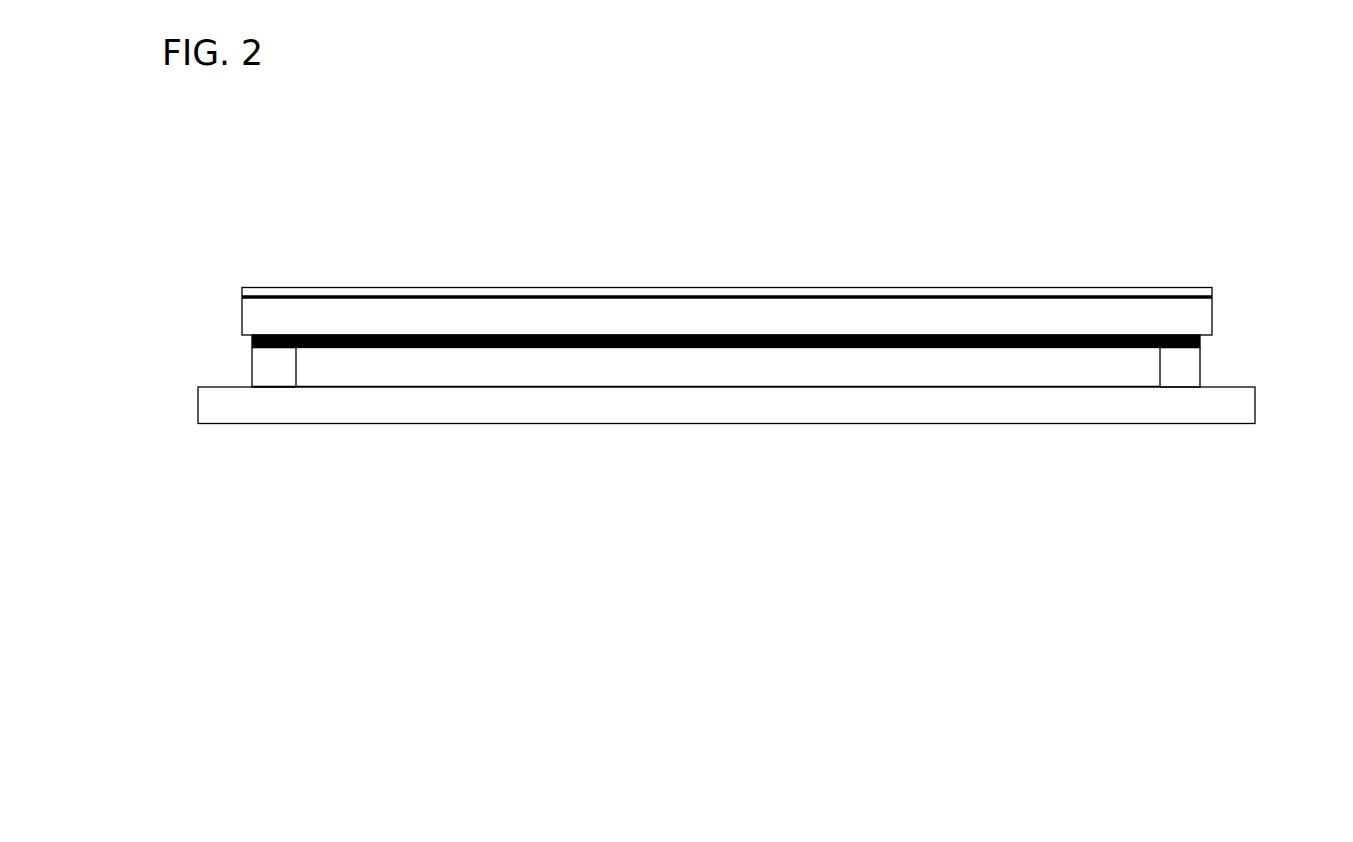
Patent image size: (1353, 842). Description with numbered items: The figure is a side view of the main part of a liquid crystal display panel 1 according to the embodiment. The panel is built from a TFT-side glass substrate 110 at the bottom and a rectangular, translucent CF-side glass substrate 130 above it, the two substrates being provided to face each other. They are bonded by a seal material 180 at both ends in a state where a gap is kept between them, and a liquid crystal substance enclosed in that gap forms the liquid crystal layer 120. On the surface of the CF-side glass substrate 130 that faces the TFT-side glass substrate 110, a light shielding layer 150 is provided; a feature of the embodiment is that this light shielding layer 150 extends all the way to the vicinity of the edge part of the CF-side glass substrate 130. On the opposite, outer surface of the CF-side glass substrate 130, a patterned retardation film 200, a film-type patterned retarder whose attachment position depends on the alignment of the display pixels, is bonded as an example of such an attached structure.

The liquid crystal display panel 1 is at (422, 255).
The TFT-side glass substrate 110 is at (1245, 408).
The liquid crystal layer 120 is at (838, 373).
The CF-side glass substrate 130 is at (1206, 321).
The light shielding layer 150 is at (251, 341).
The seal material 180 is at (274, 378).
The patterned retardation film 200 is at (242, 295).